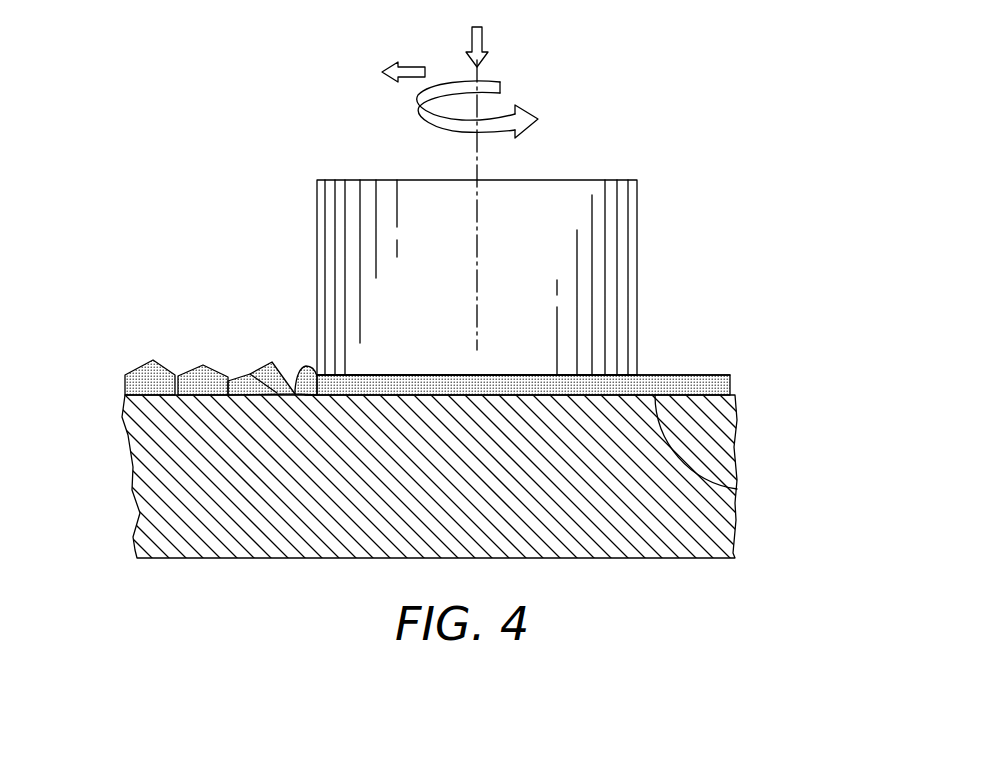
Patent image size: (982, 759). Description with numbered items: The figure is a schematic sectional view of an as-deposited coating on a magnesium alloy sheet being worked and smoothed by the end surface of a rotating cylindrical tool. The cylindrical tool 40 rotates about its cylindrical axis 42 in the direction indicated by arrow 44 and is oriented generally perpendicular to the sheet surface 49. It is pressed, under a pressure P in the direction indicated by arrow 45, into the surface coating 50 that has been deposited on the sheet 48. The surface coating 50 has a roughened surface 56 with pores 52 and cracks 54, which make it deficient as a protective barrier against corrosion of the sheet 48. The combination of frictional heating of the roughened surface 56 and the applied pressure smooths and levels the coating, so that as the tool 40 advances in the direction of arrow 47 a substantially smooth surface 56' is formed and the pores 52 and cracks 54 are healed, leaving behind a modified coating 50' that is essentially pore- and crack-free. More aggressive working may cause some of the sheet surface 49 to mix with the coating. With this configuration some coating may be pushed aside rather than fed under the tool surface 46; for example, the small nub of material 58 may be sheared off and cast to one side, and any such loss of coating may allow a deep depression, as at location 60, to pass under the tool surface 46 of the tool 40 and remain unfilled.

The cylindrical tool 40 is at (637, 202).
The cylindrical axis 42 is at (475, 157).
The arrow indicating rotation direction 44 is at (497, 116).
The arrow indicating pressure direction 45 is at (483, 42).
The tool surface 46 is at (560, 373).
The arrow indicating tool advance direction 47 is at (412, 65).
The sheet 48 is at (737, 458).
The sheet surface 49 is at (737, 489).
The surface coating 50 is at (176, 326).
The modified coating 50' is at (577, 362).
The pores 52 is at (178, 375).
The cracks 54 is at (250, 374).
The roughened surface 56 is at (150, 326).
The substantially smooth surface 56' is at (548, 322).
The small nub of material 58 is at (297, 372).
The location of deep depression 60 is at (314, 392).